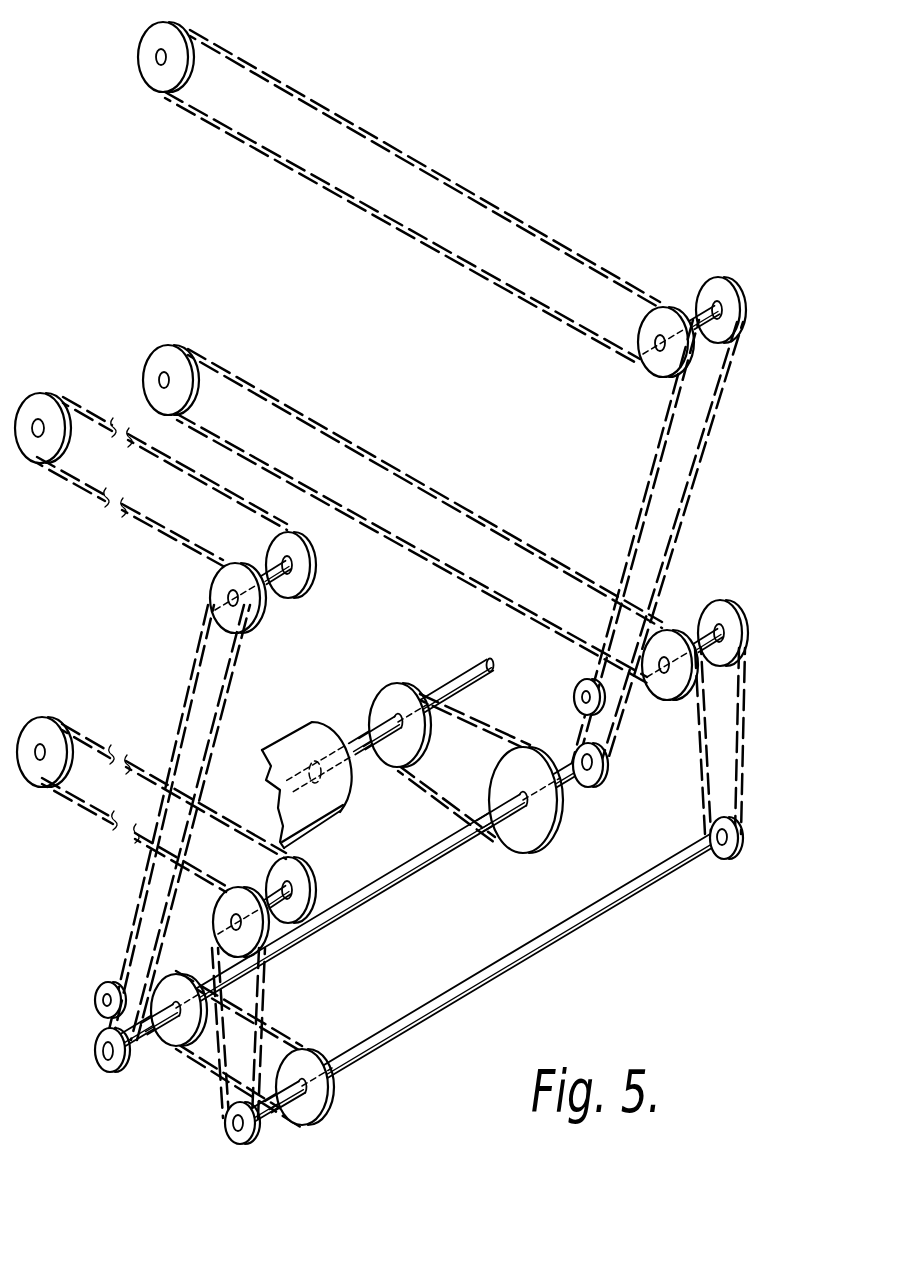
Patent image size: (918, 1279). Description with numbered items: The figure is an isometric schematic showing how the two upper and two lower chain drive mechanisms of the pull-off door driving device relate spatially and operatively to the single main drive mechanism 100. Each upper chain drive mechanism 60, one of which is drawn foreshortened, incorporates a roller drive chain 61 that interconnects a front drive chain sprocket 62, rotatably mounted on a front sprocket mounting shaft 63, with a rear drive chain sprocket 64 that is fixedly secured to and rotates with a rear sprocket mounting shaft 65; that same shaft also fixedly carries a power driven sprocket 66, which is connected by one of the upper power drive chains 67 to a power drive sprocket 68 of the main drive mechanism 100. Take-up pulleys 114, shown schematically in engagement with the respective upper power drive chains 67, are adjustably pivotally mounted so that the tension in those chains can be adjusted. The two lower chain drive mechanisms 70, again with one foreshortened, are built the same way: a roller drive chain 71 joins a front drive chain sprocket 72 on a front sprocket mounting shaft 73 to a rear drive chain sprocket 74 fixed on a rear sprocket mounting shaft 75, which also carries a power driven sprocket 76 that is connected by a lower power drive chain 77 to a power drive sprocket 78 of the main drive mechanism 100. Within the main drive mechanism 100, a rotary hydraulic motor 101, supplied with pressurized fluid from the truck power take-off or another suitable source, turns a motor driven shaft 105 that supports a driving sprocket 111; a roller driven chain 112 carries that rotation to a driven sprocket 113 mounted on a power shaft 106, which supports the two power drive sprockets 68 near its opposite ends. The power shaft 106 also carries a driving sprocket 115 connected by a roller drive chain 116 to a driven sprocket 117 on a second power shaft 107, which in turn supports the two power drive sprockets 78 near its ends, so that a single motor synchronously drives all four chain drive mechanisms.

The upper chain drive mechanism 60 is at (509, 210).
The roller drive chain 61 is at (342, 202).
The front drive chain sprocket 62 is at (157, 42).
The front sprocket mounting shaft 63 is at (156, 58).
The rear drive chain sprocket 64 is at (662, 318).
The rear sprocket mounting shaft 65 is at (654, 348).
The power driven sprocket 66 is at (718, 292).
The upper power drive chain 67 is at (650, 471).
The power drive sprocket 68 is at (605, 770).
The lower chain drive mechanism 70 is at (367, 448).
The roller drive chain 71 is at (455, 588).
The front drive chain sprocket 72 is at (170, 362).
The front sprocket mounting shaft 73 is at (159, 380).
The rear drive chain sprocket 74 is at (660, 688).
The rear sprocket mounting shaft 75 is at (665, 655).
The power driven sprocket 76 is at (718, 610).
The lower power drive chain 77 is at (699, 802).
The power drive sprocket 78 is at (716, 859).
The main drive mechanism 100 is at (482, 977).
The rotary hydraulic motor 101 is at (335, 808).
The motor driven shaft 105 is at (478, 680).
The power shaft 106 is at (430, 872).
The power shaft 107 is at (595, 922).
The driving sprocket 111 is at (388, 700).
The roller driven chain 112 is at (424, 787).
The driven sprocket 113 is at (548, 822).
The take-up pulley 114 is at (580, 688).
The driving sprocket 115 is at (175, 985).
The roller drive chain 116 is at (288, 1030).
The driven sprocket 117 is at (320, 1100).